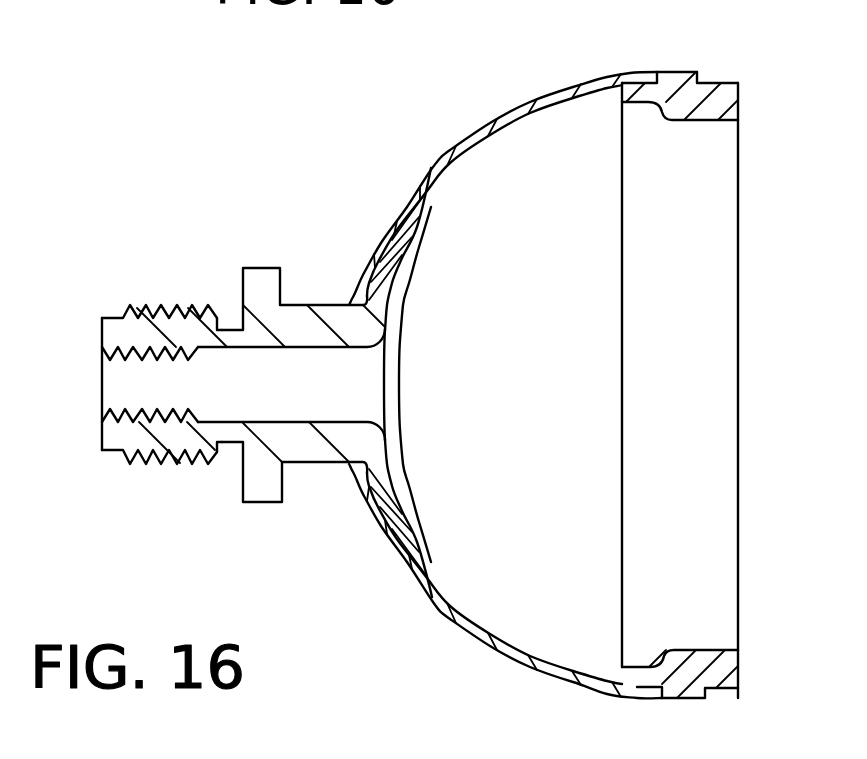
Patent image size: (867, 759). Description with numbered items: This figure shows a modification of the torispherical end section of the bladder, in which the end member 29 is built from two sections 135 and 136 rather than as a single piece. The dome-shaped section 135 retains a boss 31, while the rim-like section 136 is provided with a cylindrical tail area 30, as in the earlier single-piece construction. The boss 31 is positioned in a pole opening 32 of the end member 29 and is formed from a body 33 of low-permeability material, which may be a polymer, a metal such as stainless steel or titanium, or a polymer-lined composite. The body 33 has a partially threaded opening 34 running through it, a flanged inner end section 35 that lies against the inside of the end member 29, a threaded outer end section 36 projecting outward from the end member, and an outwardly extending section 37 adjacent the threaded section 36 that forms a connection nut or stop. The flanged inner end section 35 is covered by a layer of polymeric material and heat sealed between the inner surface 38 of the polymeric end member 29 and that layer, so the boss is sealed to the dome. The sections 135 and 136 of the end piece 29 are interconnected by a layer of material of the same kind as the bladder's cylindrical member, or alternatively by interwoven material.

The end member 29 is at (432, 651).
The cylindrical tail area 30 is at (697, 122).
The boss 31 is at (206, 391).
The pole opening 32 is at (356, 300).
The body 33 is at (313, 462).
The partially threaded opening 34 is at (115, 410).
The flanged inner end section 35 is at (382, 299).
The threaded outer end section 36 is at (183, 466).
The outwardly extending section 37 is at (240, 480).
The inner surface 38 is at (390, 490).
The end member section 135 is at (402, 203).
The end member section 136 is at (676, 68).